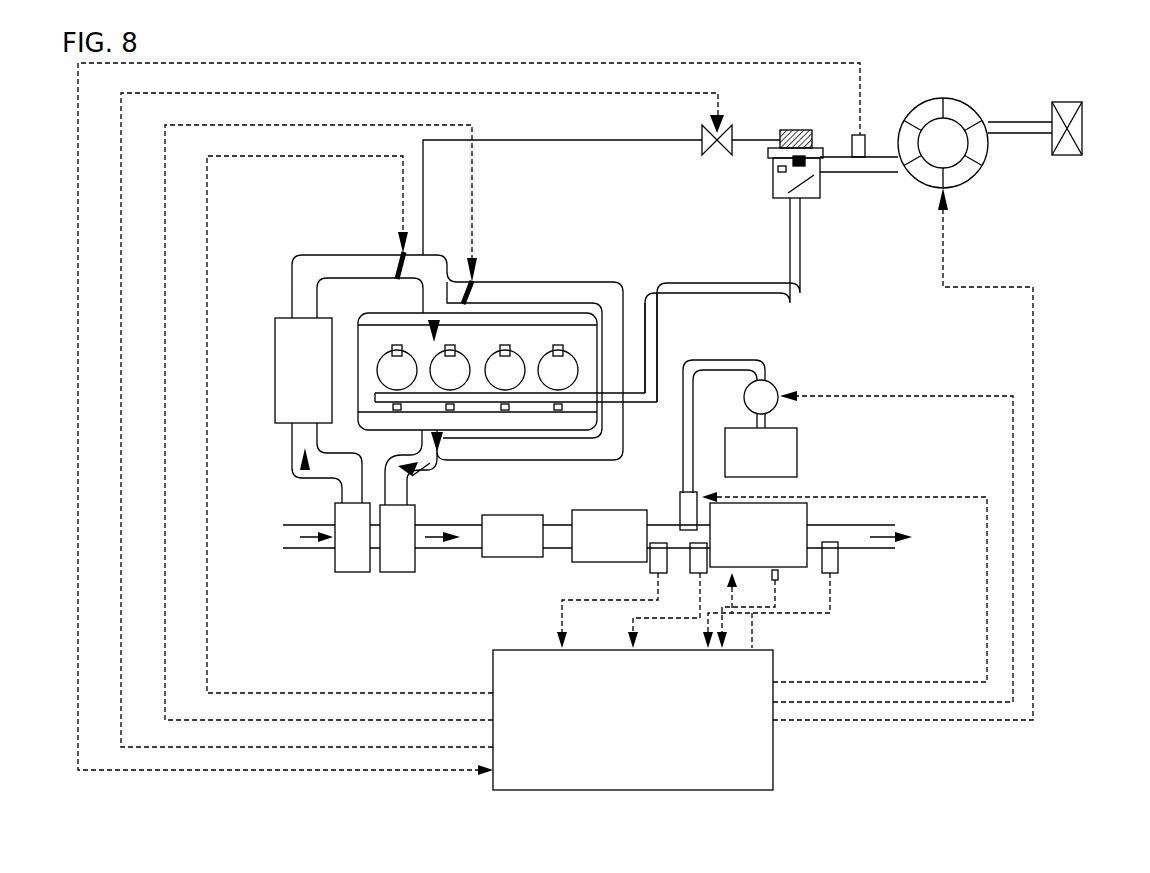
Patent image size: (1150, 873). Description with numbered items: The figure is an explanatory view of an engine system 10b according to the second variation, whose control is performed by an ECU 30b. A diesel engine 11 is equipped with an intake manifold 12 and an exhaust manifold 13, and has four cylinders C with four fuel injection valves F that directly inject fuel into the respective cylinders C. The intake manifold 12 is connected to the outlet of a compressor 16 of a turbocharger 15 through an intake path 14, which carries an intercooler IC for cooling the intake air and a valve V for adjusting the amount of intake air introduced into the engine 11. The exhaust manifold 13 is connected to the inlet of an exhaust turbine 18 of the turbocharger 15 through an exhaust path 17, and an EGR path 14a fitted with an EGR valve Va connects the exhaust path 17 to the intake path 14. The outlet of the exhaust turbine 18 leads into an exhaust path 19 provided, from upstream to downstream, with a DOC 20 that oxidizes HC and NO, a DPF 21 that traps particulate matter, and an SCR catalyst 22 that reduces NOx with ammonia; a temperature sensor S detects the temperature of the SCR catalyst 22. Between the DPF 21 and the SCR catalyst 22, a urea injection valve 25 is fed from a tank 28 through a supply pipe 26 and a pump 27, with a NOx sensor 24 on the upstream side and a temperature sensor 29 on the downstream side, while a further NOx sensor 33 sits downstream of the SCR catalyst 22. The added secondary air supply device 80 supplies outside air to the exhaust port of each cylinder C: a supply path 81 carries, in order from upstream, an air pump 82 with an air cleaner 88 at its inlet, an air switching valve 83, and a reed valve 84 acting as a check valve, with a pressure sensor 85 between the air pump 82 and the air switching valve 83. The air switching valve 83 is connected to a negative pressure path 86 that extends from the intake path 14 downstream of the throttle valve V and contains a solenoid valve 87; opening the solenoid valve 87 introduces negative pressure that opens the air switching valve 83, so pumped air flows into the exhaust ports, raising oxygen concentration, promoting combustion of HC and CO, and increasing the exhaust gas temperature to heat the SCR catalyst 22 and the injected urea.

The engine system 10b is at (1112, 115).
The diesel engine 11 is at (501, 366).
The intake manifold 12 is at (513, 312).
The exhaust manifold 13 is at (557, 420).
The intake path 14 is at (459, 328).
The EGR path 14a is at (531, 250).
The turbocharger 15 is at (353, 541).
The compressor 16 is at (345, 565).
The exhaust path 17 is at (432, 470).
The exhaust turbine 18 is at (400, 568).
The exhaust path 19 is at (447, 552).
The DOC 20 is at (510, 540).
The DPF 21 is at (600, 525).
The SCR catalyst 22 is at (780, 530).
The NOx sensor 24 is at (648, 568).
The urea injection valve 25 is at (678, 495).
The supply pipe 26 is at (727, 360).
The pump 27 is at (776, 386).
The tank 28 is at (780, 438).
The temperature sensor 29 is at (707, 575).
The ECU 30b is at (638, 792).
The NOx sensor 33 is at (835, 575).
The secondary air supply device 80 is at (863, 242).
The supply path 81 is at (790, 263).
The air pump 82 is at (975, 178).
The air switching valve 83 is at (772, 178).
The reed valve 84 is at (815, 198).
The pressure sensor 85 is at (852, 138).
The negative pressure path 86 is at (562, 144).
The solenoid valve 87 is at (708, 149).
The air cleaner 88 is at (1062, 160).
The intercooler IC is at (275, 364).
The valve V is at (392, 250).
The EGR valve Va is at (466, 280).
The cylinder C is at (378, 352).
The fuel injection valve F is at (393, 345).
The temperature sensor S is at (779, 578).